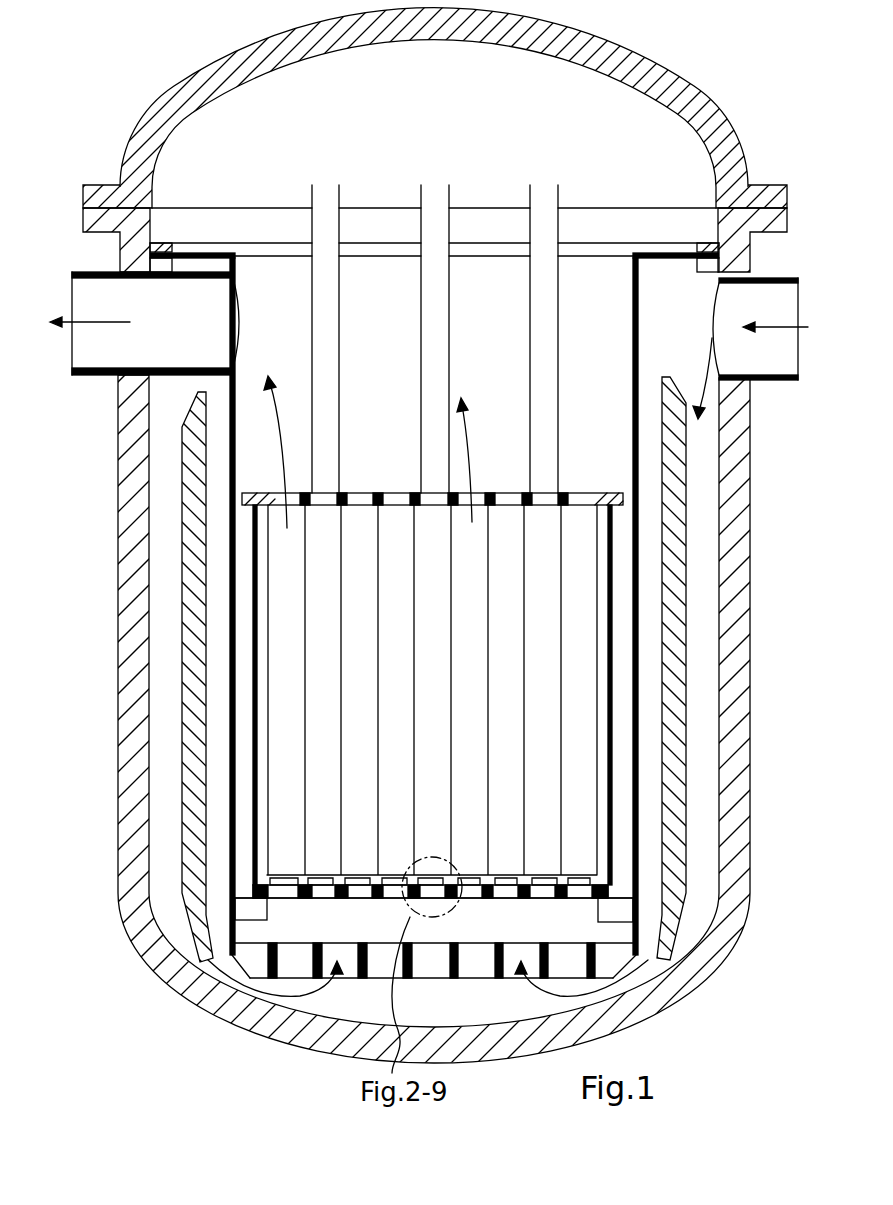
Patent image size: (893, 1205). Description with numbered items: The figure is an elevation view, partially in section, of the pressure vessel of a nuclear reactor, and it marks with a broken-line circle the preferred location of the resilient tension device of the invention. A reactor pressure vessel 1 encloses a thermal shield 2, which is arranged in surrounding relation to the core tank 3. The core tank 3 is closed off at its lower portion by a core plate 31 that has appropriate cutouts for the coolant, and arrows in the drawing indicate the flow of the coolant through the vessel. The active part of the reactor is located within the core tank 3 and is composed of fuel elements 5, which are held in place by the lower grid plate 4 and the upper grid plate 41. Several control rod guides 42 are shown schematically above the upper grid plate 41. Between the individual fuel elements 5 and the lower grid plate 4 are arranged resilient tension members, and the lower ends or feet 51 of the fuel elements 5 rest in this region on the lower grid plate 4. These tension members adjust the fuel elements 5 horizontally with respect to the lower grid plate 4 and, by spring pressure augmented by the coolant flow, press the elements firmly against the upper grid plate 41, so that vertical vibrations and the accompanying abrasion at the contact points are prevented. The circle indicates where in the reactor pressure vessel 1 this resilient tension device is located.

The reactor pressure vessel 1 is at (737, 530).
The thermal shield 2 is at (672, 467).
The core tank 3 is at (640, 635).
The core plate 31 is at (430, 970).
The lower grid plate 4 is at (538, 892).
The upper grid plate 41 is at (263, 494).
The control rod guides 42 is at (433, 310).
The fuel elements 5 is at (320, 707).
The fuel assembly feet 51 is at (355, 882).